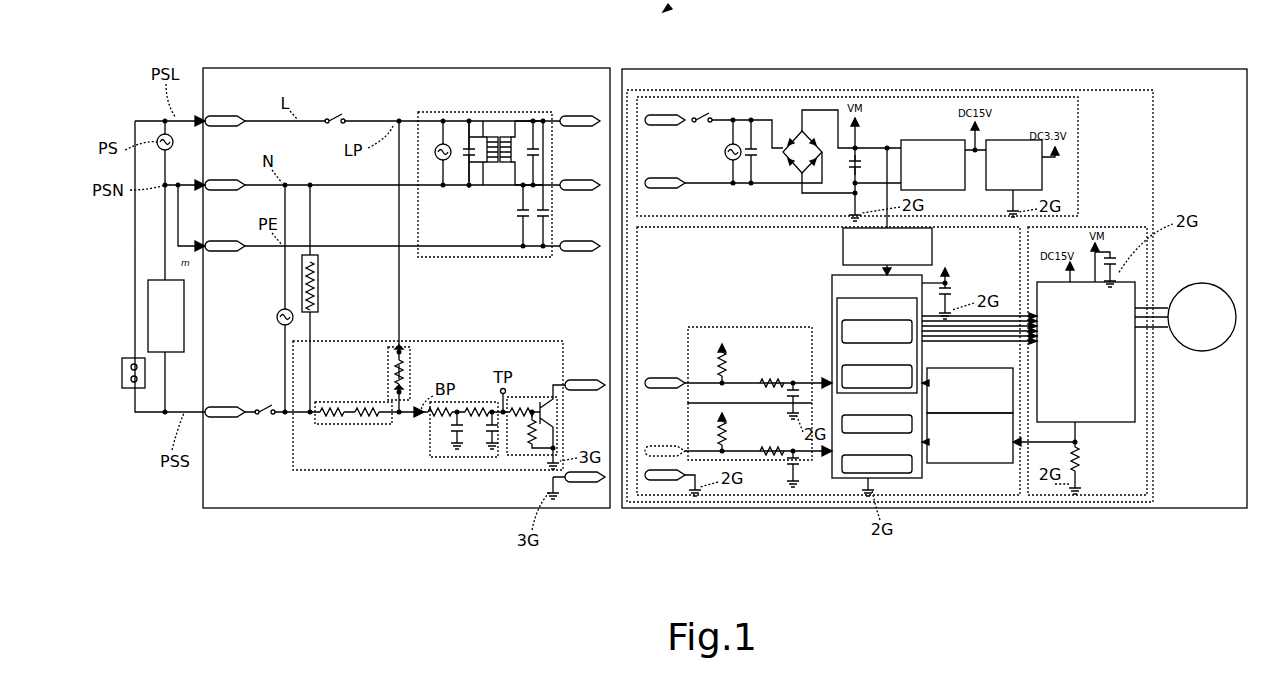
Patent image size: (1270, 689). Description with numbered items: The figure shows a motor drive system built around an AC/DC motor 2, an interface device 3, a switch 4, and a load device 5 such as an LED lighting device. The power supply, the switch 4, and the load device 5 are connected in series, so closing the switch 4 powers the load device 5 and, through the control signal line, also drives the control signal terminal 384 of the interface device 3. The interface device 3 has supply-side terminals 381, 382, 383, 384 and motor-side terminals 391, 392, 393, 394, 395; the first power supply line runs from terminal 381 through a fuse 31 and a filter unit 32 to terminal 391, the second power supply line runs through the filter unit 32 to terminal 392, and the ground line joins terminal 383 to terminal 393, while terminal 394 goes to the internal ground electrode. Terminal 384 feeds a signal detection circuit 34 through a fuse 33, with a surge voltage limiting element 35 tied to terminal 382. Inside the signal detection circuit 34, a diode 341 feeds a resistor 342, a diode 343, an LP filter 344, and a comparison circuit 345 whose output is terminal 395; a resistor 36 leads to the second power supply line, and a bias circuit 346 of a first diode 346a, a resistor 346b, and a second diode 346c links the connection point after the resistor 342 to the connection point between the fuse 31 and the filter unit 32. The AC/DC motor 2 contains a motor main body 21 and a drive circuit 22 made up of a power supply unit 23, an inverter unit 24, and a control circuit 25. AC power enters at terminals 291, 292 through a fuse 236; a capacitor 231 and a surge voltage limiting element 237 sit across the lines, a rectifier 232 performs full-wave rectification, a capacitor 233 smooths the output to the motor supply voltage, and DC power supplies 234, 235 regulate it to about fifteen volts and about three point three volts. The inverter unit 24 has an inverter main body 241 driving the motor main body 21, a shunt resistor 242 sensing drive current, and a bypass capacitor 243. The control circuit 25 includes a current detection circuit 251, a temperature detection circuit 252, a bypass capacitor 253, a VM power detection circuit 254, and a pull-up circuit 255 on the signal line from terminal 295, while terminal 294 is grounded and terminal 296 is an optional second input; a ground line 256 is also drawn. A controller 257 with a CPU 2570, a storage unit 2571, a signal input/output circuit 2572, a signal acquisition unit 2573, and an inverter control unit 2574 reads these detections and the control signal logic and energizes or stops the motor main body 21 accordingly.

The AC/DC motor 2 is at (816, 69).
The interface device 3 is at (455, 68).
The switch 4 is at (130, 358).
The load device 5 is at (146, 288).
The motor main body 21 is at (1198, 282).
The drive circuit 22 is at (1153, 125).
The power supply unit 23 is at (1078, 162).
The inverter unit 24 is at (1075, 495).
The control circuit 25 is at (925, 495).
The fuse 31 is at (337, 114).
The filter unit 32 is at (495, 257).
The fuse 33 is at (261, 417).
The signal detection circuit 34 is at (470, 341).
The surge voltage limiting element 35 is at (277, 320).
The resistor 36 is at (318, 280).
The capacitor 231 is at (752, 183).
The rectifier 232 is at (792, 175).
The capacitor 233 is at (860, 158).
The DC power supply 234 is at (925, 140).
The DC power supply 235 is at (1006, 140).
The fuse 236 is at (700, 116).
The surge voltage limiting element 237 is at (727, 149).
The inverter main body 241 is at (1135, 385).
The shunt resistor 242 is at (1081, 461).
The bypass capacitor 243 is at (1111, 248).
The current detection circuit 251 is at (1010, 463).
The temperature detection circuit 252 is at (1000, 368).
The bypass capacitor 253 is at (952, 286).
The VM power detection circuit 254 is at (843, 250).
The pull-up circuit 255 is at (748, 327).
The ground line 256 is at (770, 508).
The controller 257 is at (864, 385).
The central processing unit 2570 is at (853, 297).
The storage unit 2571 is at (853, 415).
The signal input/output circuit 2572 is at (853, 455).
The signal acquisition unit 2573 is at (853, 320).
The inverter control unit 2574 is at (853, 365).
The terminal 291 is at (667, 125).
The terminal 292 is at (667, 188).
The terminal 294 is at (664, 480).
The terminal 295 is at (665, 388).
The terminal 296 is at (678, 446).
The diode 341 is at (304, 470).
The resistor 342 is at (357, 424).
The diode 343 is at (423, 420).
The LP filter 344 is at (457, 457).
The comparison circuit 345 is at (530, 455).
The bias circuit 346 is at (404, 266).
The first diode 346a is at (393, 393).
The resistor 346b is at (393, 375).
The second diode 346c is at (393, 355).
The terminal 381 is at (229, 128).
The terminal 382 is at (229, 191).
The terminal 383 is at (229, 252).
The terminal 384 is at (229, 418).
The terminal 391 is at (582, 127).
The terminal 392 is at (582, 191).
The terminal 393 is at (582, 252).
The terminal 394 is at (584, 483).
The terminal 395 is at (586, 391).